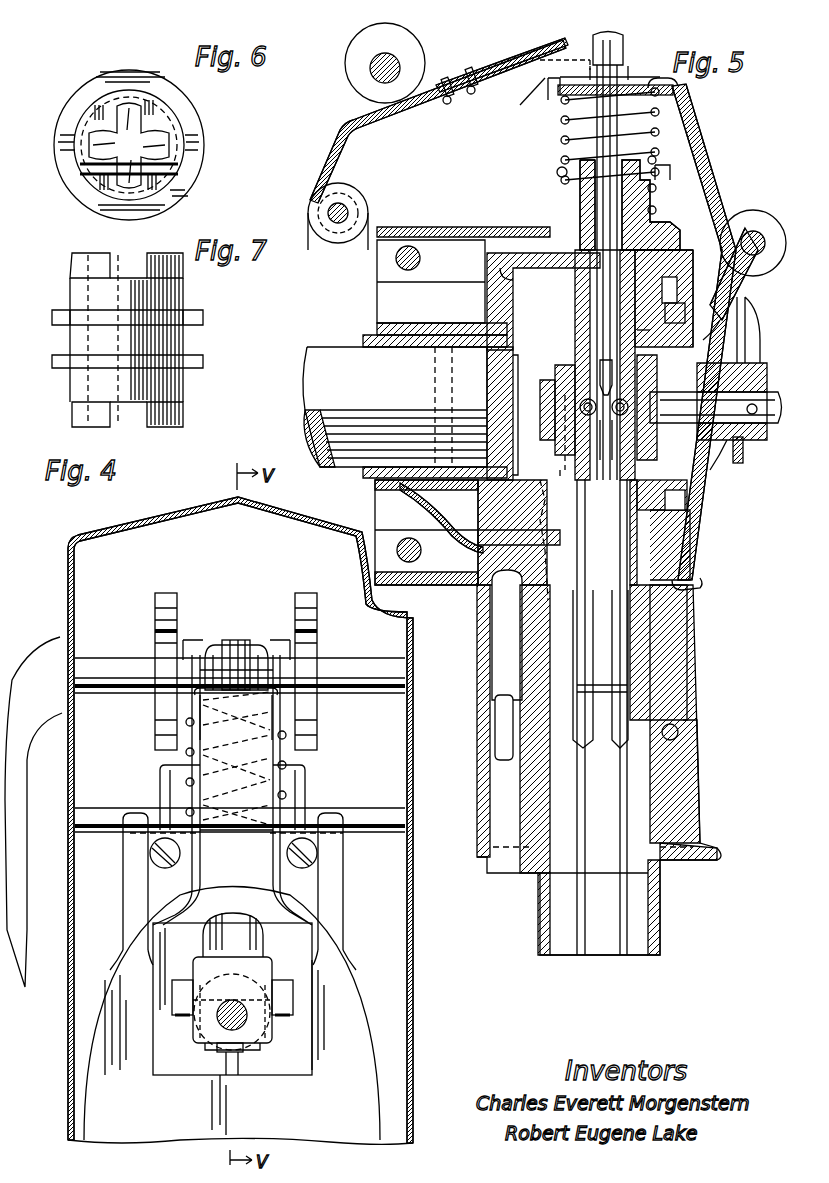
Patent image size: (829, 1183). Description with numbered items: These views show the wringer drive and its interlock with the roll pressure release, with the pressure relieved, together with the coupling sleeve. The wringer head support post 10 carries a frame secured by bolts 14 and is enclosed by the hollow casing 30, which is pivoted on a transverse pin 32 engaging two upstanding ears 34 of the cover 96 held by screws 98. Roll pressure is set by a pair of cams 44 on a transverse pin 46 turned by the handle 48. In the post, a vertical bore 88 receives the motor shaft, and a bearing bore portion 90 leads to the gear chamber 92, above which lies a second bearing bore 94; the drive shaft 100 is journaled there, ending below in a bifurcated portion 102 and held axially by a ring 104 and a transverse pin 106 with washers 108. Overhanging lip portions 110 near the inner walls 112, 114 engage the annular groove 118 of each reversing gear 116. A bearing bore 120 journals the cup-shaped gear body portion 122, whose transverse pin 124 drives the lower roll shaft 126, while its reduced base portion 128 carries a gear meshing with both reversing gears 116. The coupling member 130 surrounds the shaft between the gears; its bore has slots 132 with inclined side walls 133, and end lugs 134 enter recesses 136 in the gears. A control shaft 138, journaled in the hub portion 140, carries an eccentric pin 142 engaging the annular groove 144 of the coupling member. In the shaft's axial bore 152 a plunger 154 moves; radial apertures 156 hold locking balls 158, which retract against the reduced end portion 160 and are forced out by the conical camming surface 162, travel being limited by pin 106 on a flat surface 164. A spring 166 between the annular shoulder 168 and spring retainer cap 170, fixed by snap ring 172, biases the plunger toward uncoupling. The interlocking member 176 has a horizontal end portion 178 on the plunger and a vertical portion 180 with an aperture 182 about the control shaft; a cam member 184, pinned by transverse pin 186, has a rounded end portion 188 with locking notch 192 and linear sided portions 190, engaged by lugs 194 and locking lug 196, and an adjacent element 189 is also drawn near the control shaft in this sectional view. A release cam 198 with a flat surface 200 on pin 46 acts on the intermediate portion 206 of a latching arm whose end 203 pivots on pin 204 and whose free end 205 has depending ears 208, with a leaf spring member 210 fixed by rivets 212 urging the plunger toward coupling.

In FIG. 5, the wringer head support post 10 is at (686, 639).
In FIG. 5, the bolts 14 is at (396, 260).
In FIG. 4, the wringer head casing 30 is at (68, 570).
In FIG. 5, the transverse pin 32 is at (778, 210).
In FIG. 4, the upstanding ears 34 is at (145, 850).
In FIG. 5, the upstanding ears 34 is at (755, 290).
In FIG. 4, the rotating cams 44 is at (295, 600).
In FIG. 4, the transverse pin 46 is at (100, 658).
In FIG. 5, the transverse pin 46 is at (400, 62).
In FIG. 4, the handle 48 is at (55, 640).
In FIG. 5, the vertical bore 88 is at (645, 920).
In FIG. 5, the bearing bore portion 90 is at (670, 600).
In FIG. 5, the gear chamber 92 is at (690, 490).
In FIG. 5, the second bearing bore 94 is at (655, 226).
In FIG. 4, the cover 96 is at (360, 915).
In FIG. 5, the cover 96 is at (688, 540).
In FIG. 4, the screws 98 is at (160, 864).
In FIG. 5, the drive shaft 100 is at (640, 150).
In FIG. 5, the bifurcated portion 102 is at (612, 750).
In FIG. 5, the ring 104 is at (640, 672).
In FIG. 5, the transverse pin 106 is at (556, 170).
In FIG. 5, the washers 108 is at (655, 172).
In FIG. 5, the lip portions 110 is at (487, 262).
In FIG. 5, the inner wall 112 is at (478, 558).
In FIG. 5, the inner wall 114 is at (487, 290).
In FIG. 5, the reversing gears 116 is at (660, 330).
In FIG. 5, the annular groove 118 is at (645, 270).
In FIG. 5, the bearing bore 120 is at (398, 330).
In FIG. 5, the driving gear body portion 122 is at (468, 485).
In FIG. 5, the transverse pin 124 is at (395, 407).
In FIG. 5, the lower wringer roll shaft 126 is at (340, 345).
In FIG. 5, the reduced diameter base portion 128 is at (520, 362).
In FIG. 6, the coupling member 130 is at (210, 135).
In FIG. 7, the coupling member 130 is at (191, 394).
In FIG. 5, the coupling member 130 is at (575, 330).
In FIG. 6, the longitudinally extending slots 132 is at (129, 145).
In FIG. 6, the side walls 133 is at (100, 118).
In FIG. 7, the projecting lugs 134 is at (145, 266).
In FIG. 5, the recesses 136 is at (690, 293).
In FIG. 4, the control element shaft 138 is at (244, 1025).
In FIG. 5, the control element shaft 138 is at (772, 392).
In FIG. 5, the hub portion 140 is at (713, 470).
In FIG. 5, the pin 142 is at (712, 392).
In FIG. 7, the annular groove 144 is at (186, 346).
In FIG. 5, the annular groove 144 is at (578, 403).
In FIG. 5, the axial bore 152 is at (620, 462).
In FIG. 4, the plunger 154 is at (240, 640).
In FIG. 5, the plunger 154 is at (623, 52).
In FIG. 5, the radial apertures 156 is at (555, 420).
In FIG. 5, the locking balls 158 is at (660, 380).
In FIG. 5, the reduced diameter end portion 160 is at (625, 360).
In FIG. 5, the conical camming surface 162 is at (643, 338).
In FIG. 5, the flat surface 164 is at (560, 128).
In FIG. 4, the spring 166 is at (285, 775).
In FIG. 5, the spring 166 is at (560, 146).
In FIG. 5, the annular shoulder 168 is at (660, 198).
In FIG. 5, the spring retainer cap 170 is at (675, 95).
In FIG. 5, the snap ring 172 is at (624, 72).
In FIG. 4, the interlocking member 176 is at (290, 764).
In FIG. 5, the interlocking member 176 is at (709, 139).
In FIG. 5, the horizontal end portion 178 is at (682, 86).
In FIG. 4, the vertical portion 180 is at (312, 963).
In FIG. 5, the vertical portion 180 is at (748, 325).
In FIG. 4, the slot-like aperture 182 is at (263, 935).
In FIG. 4, the cam member 184 is at (222, 958).
In FIG. 4, the transverse pin 186 is at (262, 1010).
In FIG. 5, the transverse pin 186 is at (743, 455).
In FIG. 4, the rounded end portion 188 is at (205, 1032).
In FIG. 5, the link 189 is at (745, 365).
In FIG. 4, the linear sided portion 190 is at (210, 968).
In FIG. 4, the locking notch 192 is at (248, 1050).
In FIG. 4, the lugs 194 is at (182, 1016).
In FIG. 4, the locking lug 196 is at (232, 1052).
In FIG. 4, the release cam 198 is at (215, 645).
In FIG. 5, the release cam 198 is at (355, 62).
In FIG. 5, the flat surface 200 is at (355, 124).
In FIG. 5, the end 203 is at (365, 200).
In FIG. 4, the pin 204 is at (112, 812).
In FIG. 5, the pin 204 is at (348, 213).
In FIG. 5, the free end 205 is at (525, 96).
In FIG. 5, the intermediate portion 206 is at (385, 105).
In FIG. 4, the depending ears 208 is at (205, 666).
In FIG. 5, the depending ears 208 is at (550, 98).
In FIG. 5, the leaf spring member 210 is at (505, 58).
In FIG. 5, the rivets 212 is at (448, 78).